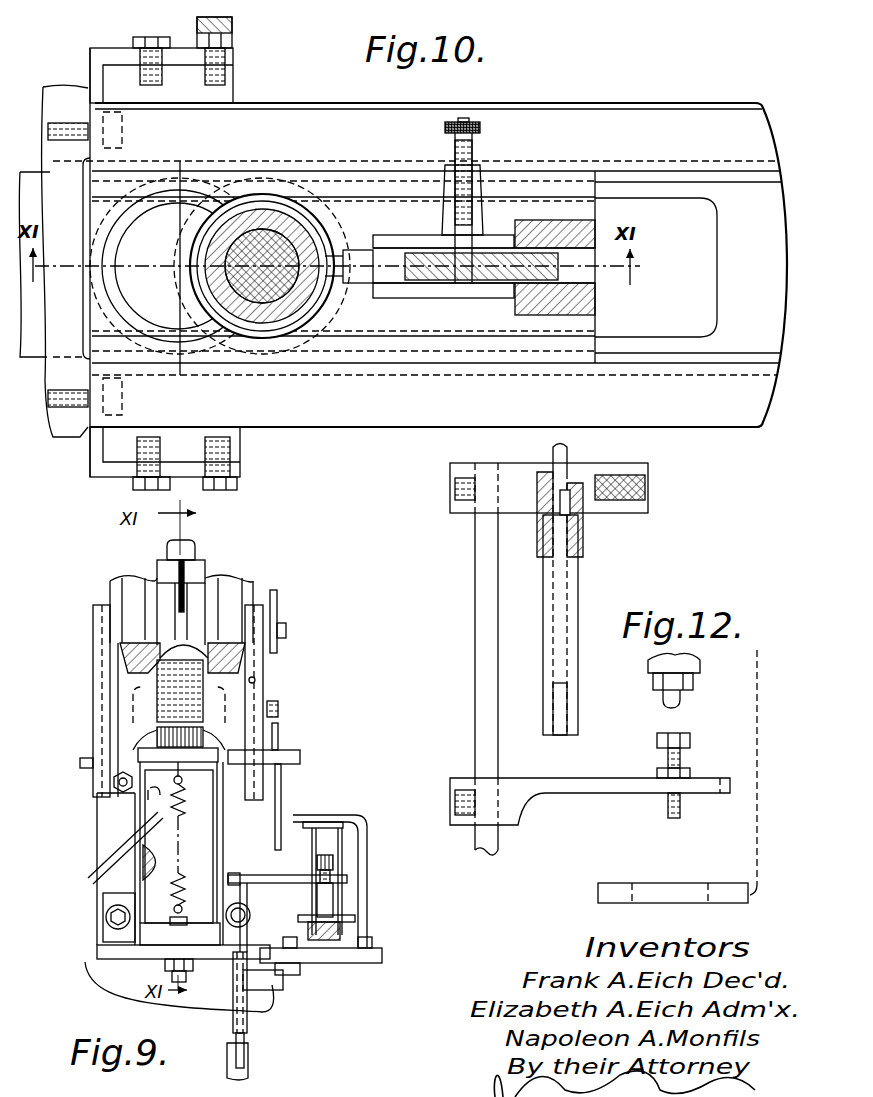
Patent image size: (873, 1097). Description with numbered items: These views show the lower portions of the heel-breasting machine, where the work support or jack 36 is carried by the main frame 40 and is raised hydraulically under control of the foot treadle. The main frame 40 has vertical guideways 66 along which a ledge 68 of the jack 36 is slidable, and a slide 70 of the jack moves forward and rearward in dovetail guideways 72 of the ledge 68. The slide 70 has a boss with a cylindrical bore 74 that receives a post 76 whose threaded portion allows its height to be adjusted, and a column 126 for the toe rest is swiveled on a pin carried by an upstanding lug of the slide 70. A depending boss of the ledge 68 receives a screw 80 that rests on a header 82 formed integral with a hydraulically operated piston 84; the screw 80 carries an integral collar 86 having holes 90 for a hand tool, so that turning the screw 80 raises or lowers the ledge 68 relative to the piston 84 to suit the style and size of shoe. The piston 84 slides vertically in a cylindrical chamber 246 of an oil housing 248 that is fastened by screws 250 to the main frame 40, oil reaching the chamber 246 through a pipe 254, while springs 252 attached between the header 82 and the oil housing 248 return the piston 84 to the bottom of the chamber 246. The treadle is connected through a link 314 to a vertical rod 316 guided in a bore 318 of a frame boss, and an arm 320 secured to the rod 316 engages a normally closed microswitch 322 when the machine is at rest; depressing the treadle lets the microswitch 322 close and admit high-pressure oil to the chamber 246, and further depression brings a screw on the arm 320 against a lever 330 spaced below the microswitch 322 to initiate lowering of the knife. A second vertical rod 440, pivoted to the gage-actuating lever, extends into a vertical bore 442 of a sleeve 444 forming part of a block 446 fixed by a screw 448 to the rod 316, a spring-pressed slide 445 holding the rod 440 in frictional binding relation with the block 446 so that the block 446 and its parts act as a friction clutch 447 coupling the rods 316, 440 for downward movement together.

In FIG. 10, the work support or jack 36 is at (591, 86).
In FIG. 9, the work support or jack 36 is at (320, 752).
In FIG. 10, the main frame 40 is at (60, 98).
In FIG. 9, the main frame 40 is at (97, 975).
In FIG. 10, the vertical guideways 66 is at (200, 78).
In FIG. 9, the vertical guideways 66 is at (256, 684).
In FIG. 10, the ledge 68 is at (673, 107).
In FIG. 9, the ledge 68 is at (128, 683).
In FIG. 10, the slide 70 is at (585, 330).
In FIG. 9, the slide 70 is at (200, 645).
In FIG. 10, the dovetail guideways 72 is at (655, 180).
In FIG. 9, the dovetail guideways 72 is at (205, 642).
In FIG. 10, the cylindrical bore 74 is at (283, 244).
In FIG. 10, the post 76 is at (345, 246).
In FIG. 9, the post 76 is at (195, 552).
In FIG. 10, the screw 80 is at (170, 266).
In FIG. 9, the screw 80 is at (165, 652).
In FIG. 10, the header 82 is at (32, 182).
In FIG. 9, the header 82 is at (143, 755).
In FIG. 10, the piston 84 is at (146, 182).
In FIG. 9, the piston 84 is at (148, 855).
In FIG. 9, the collar 86 is at (249, 713).
In FIG. 9, the holes 90 is at (155, 742).
In FIG. 10, the column 126 is at (480, 284).
In FIG. 9, the cylindrical chamber 246 is at (92, 882).
In FIG. 10, the oil housing 248 is at (215, 192).
In FIG. 9, the oil housing 248 is at (150, 830).
In FIG. 9, the screws 250 is at (118, 930).
In FIG. 9, the springs 252 is at (198, 843).
In FIG. 9, the pipe 254 is at (190, 982).
In FIG. 9, the link 314 is at (250, 1062).
In FIG. 9, the vertical rod 316 is at (246, 1044).
In FIG. 12, the vertical rod 316 is at (486, 746).
In FIG. 9, the bore 318 is at (238, 1018).
In FIG. 9, the arm 320 is at (350, 866).
In FIG. 12, the arm 320 is at (566, 803).
In FIG. 9, the microswitch 322 is at (345, 853).
In FIG. 12, the microswitch 322 is at (712, 662).
In FIG. 9, the lever 330 is at (345, 914).
In FIG. 12, the lever 330 is at (660, 883).
In FIG. 9, the vertical rod 440 is at (278, 737).
In FIG. 12, the vertical rod 440 is at (553, 452).
In FIG. 12, the vertical bore 442 is at (580, 540).
In FIG. 9, the sleeve 444 is at (282, 810).
In FIG. 12, the sleeve 444 is at (579, 613).
In FIG. 12, the spring-pressed slide 445 is at (583, 472).
In FIG. 9, the block 446 is at (272, 778).
In FIG. 12, the block 446 is at (542, 512).
In FIG. 12, the friction clutch 447 is at (634, 558).
In FIG. 12, the screw 448 is at (450, 488).